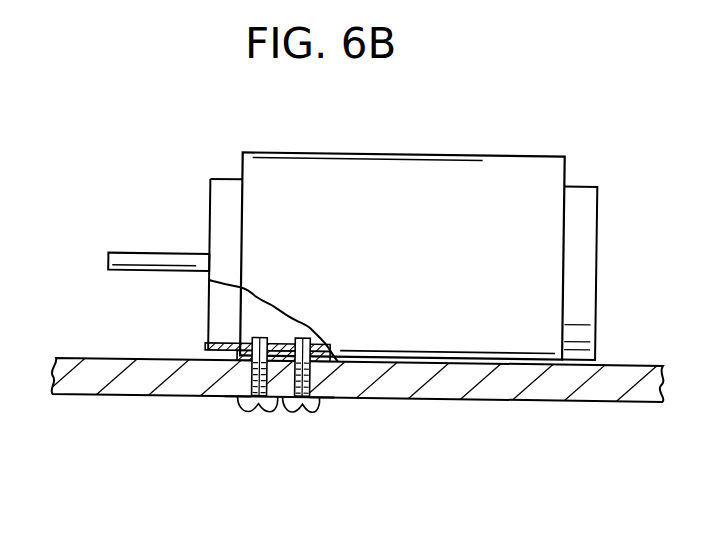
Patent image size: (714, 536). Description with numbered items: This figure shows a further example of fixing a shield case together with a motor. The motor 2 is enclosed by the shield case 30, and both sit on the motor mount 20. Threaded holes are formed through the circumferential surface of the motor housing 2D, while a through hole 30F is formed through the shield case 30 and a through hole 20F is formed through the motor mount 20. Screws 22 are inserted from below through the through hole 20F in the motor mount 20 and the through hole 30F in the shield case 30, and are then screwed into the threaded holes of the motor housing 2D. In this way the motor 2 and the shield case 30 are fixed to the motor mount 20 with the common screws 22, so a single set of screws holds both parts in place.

The shield case 30 is at (527, 162).
The motor 2 is at (590, 195).
The motor housing 2D is at (222, 345).
The motor mount 20 is at (140, 383).
The through hole 20F is at (230, 394).
The screw 22 is at (298, 410).
The through hole 30F is at (325, 394).